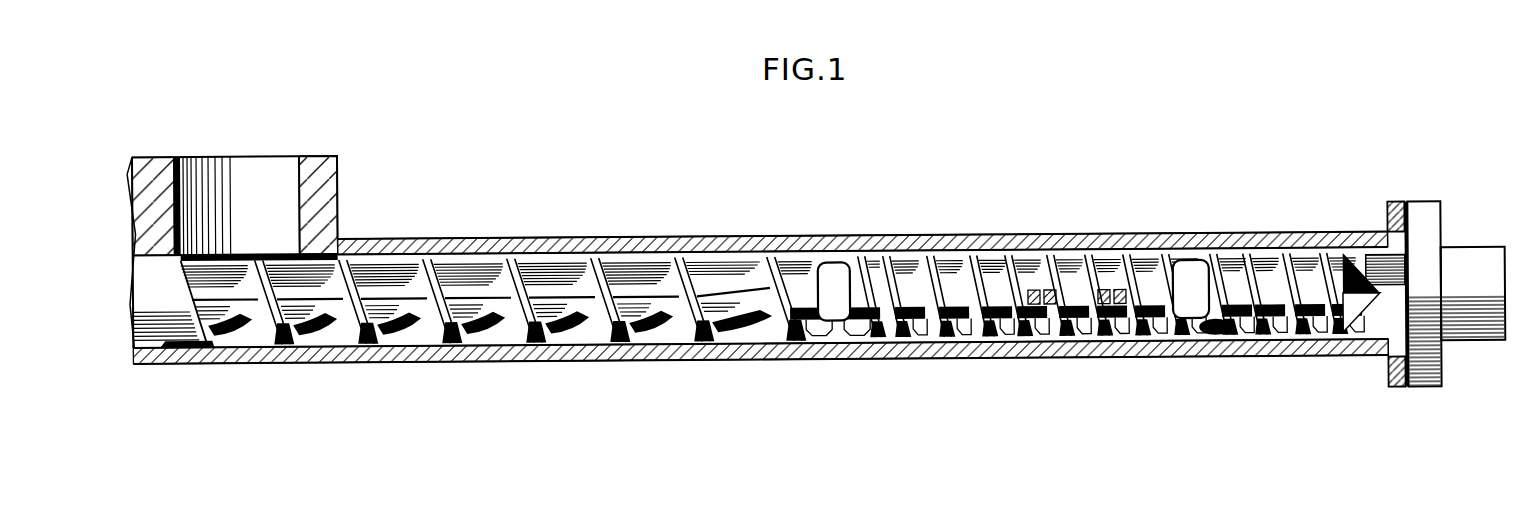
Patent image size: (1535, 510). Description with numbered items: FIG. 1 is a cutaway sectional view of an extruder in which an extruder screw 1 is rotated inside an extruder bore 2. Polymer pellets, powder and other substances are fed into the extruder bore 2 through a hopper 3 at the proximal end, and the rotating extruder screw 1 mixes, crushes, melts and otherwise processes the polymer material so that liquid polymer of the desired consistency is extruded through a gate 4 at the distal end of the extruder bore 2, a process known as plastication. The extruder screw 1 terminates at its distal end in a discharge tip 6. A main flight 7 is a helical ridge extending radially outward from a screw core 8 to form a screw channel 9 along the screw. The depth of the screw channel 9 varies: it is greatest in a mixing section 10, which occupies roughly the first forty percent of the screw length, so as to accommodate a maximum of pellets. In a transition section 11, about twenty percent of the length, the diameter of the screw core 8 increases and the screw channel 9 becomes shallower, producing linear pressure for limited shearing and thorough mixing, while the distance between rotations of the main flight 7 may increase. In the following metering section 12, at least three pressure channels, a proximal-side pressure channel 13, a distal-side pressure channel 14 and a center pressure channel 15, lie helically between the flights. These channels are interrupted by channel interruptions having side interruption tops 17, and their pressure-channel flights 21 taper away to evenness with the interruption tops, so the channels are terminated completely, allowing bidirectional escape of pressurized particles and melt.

The extruder screw 1 is at (160, 345).
The extruder bore 2 is at (603, 240).
The hopper 3 is at (272, 177).
The gate 4 is at (1430, 240).
The discharge tip 6 is at (1346, 243).
The main flight 7 is at (362, 342).
The screw core 8 is at (489, 320).
The screw channel 9 is at (655, 330).
The mixing section 10 is at (495, 196).
The transition section 11 is at (704, 192).
The metering section 12 is at (1038, 204).
The proximal-side pressure channel 13 is at (818, 333).
The distal-side pressure channel 14 is at (895, 333).
The center pressure channel 15 is at (853, 330).
The side interruption tops 17 is at (1082, 330).
The pressure-channel flights 21 is at (1205, 330).